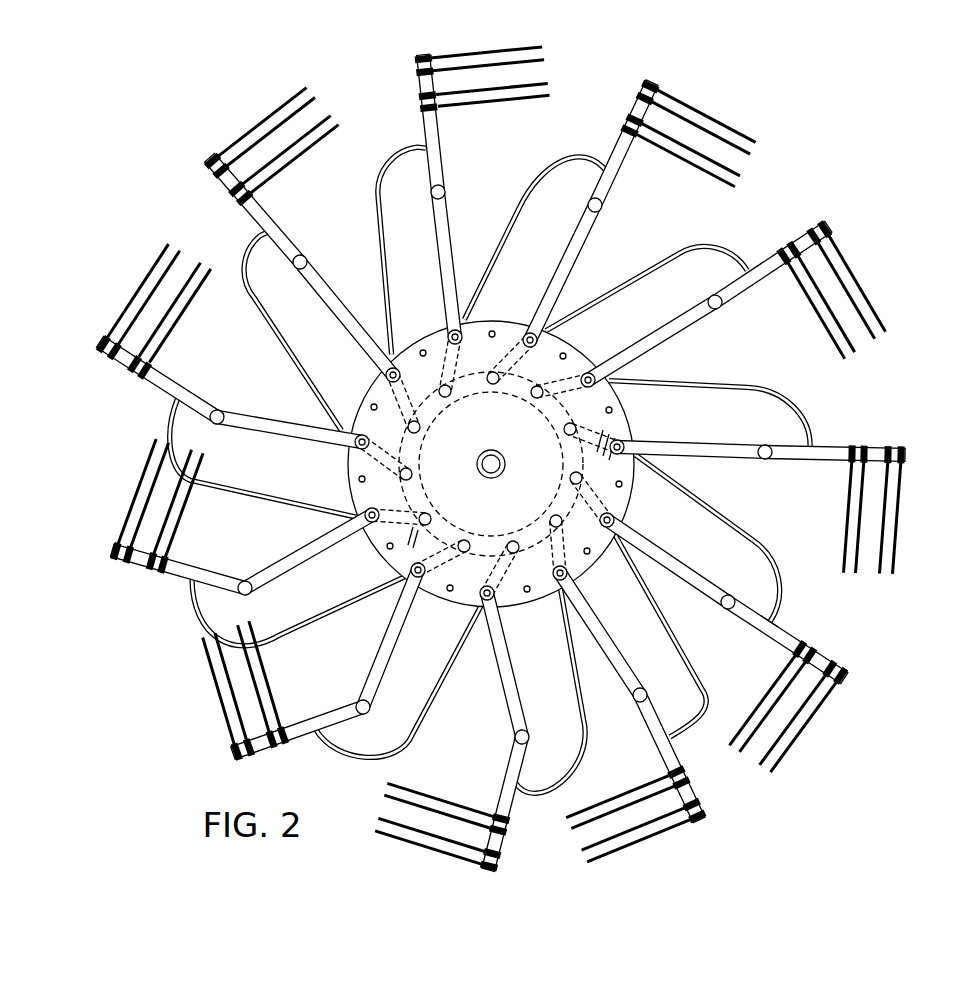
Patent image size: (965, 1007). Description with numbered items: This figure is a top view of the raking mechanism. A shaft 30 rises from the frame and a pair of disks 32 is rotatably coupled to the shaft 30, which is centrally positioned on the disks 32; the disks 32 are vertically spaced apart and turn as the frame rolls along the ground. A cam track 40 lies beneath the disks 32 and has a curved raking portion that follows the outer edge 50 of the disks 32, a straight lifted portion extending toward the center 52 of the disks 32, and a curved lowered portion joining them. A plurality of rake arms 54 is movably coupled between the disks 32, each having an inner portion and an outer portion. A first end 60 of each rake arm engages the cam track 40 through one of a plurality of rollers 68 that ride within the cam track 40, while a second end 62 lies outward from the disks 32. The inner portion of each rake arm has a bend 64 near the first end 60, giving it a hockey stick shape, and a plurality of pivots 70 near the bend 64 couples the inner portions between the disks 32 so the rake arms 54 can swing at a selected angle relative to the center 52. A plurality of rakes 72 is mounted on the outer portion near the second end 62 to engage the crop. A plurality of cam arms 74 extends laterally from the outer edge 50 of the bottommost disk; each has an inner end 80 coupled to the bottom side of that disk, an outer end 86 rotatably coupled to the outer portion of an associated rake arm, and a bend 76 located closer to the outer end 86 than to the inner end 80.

The shaft 30 is at (596, 306).
The pair of disks 32 is at (348, 476).
The cam track 40 is at (378, 290).
The outer edge 50 is at (622, 302).
The center 52 is at (470, 481).
The rake arms 54 is at (541, 171).
The first end 60 is at (307, 388).
The second end 62 is at (418, 60).
The bend 64 is at (760, 392).
The rollers 68 is at (466, 526).
The pivots 70 is at (528, 332).
The rakes 72 is at (530, 43).
The cam arms 74 is at (806, 418).
The bend 76 is at (773, 577).
The inner end 80 is at (690, 456).
The outer end 86 is at (777, 627).